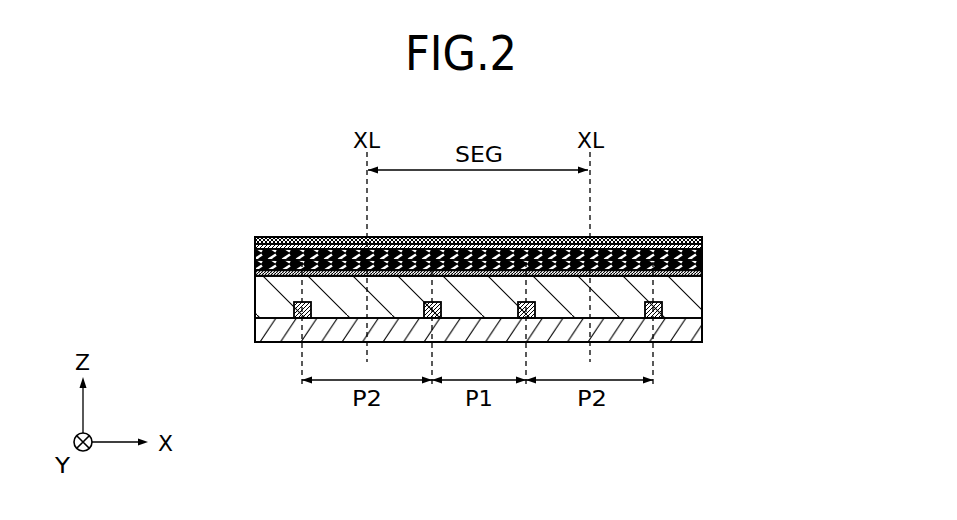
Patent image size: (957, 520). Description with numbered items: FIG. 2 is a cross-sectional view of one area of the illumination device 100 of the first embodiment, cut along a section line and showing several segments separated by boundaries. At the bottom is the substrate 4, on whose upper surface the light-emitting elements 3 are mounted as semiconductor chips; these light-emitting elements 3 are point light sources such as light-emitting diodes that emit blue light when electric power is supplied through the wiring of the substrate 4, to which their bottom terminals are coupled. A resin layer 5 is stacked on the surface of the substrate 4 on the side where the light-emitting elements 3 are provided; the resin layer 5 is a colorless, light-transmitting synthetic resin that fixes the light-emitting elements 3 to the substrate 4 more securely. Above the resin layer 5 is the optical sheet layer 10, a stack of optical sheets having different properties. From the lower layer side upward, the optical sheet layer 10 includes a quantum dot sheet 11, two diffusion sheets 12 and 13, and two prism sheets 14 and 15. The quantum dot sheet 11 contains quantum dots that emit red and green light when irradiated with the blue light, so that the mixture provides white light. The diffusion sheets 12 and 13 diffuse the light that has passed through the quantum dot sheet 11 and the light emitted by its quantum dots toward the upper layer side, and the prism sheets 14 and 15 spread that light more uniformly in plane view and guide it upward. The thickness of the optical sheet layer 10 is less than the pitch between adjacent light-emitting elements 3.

The illumination device 100 is at (272, 188).
The optical sheet layer 10 is at (553, 222).
The prism sheet 15 is at (703, 238).
The prism sheet 14 is at (703, 245).
The diffusion sheet 13 is at (703, 251).
The diffusion sheet 12 is at (703, 262).
The quantum dot sheet 11 is at (523, 269).
The resin layer 5 is at (686, 292).
The substrate 4 is at (684, 334).
The light-emitting element 3 is at (317, 237).